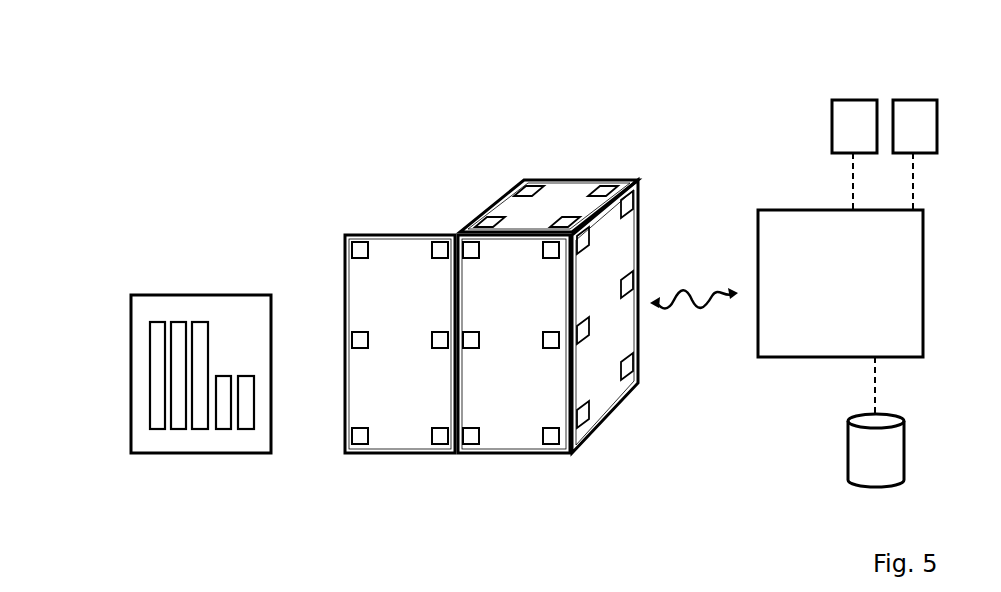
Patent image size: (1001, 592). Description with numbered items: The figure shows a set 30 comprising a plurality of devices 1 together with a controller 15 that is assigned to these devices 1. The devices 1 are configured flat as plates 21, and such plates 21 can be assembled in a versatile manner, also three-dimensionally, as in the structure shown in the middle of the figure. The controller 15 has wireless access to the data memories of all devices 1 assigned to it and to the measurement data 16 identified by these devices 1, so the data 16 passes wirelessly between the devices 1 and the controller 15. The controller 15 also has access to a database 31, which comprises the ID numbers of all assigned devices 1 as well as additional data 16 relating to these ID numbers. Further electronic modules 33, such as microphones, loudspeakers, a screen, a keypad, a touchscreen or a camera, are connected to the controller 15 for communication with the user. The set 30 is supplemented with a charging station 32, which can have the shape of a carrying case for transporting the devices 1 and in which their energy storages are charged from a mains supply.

The device 1 is at (246, 398).
The plate 21 is at (393, 277).
The charging station 32 is at (158, 308).
The data 16 is at (717, 287).
The controller 15 is at (780, 235).
The electronic modules 33 is at (853, 135).
The database 31 is at (892, 460).
The set 30 is at (955, 487).